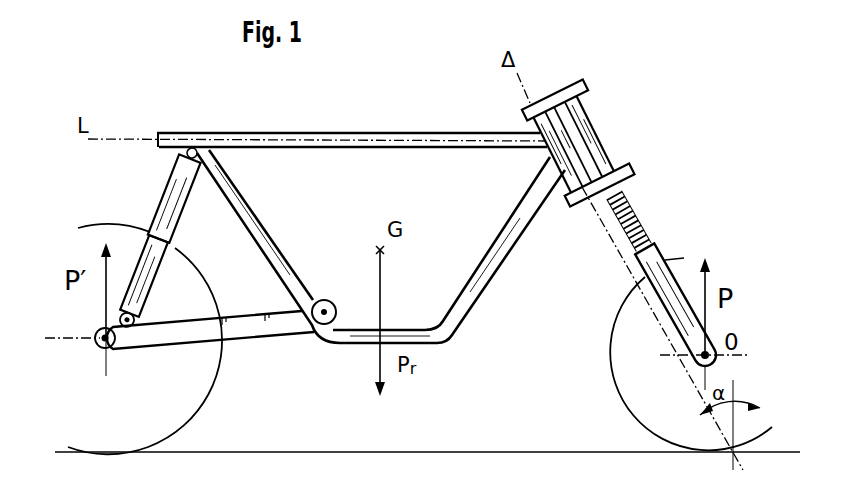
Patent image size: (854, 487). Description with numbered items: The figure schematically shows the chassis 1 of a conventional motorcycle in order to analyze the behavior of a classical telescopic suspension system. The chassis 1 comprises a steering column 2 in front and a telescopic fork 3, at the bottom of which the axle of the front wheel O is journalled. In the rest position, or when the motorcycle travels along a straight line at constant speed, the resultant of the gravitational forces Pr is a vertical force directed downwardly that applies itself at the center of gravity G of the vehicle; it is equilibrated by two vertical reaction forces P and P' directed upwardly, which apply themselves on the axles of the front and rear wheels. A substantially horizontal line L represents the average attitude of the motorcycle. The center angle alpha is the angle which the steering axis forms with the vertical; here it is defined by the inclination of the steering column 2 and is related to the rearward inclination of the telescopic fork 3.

The chassis 1 is at (396, 133).
The steering column 2 is at (538, 99).
The telescopic fork 3 is at (653, 238).